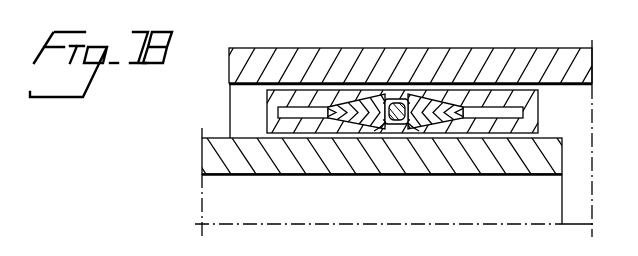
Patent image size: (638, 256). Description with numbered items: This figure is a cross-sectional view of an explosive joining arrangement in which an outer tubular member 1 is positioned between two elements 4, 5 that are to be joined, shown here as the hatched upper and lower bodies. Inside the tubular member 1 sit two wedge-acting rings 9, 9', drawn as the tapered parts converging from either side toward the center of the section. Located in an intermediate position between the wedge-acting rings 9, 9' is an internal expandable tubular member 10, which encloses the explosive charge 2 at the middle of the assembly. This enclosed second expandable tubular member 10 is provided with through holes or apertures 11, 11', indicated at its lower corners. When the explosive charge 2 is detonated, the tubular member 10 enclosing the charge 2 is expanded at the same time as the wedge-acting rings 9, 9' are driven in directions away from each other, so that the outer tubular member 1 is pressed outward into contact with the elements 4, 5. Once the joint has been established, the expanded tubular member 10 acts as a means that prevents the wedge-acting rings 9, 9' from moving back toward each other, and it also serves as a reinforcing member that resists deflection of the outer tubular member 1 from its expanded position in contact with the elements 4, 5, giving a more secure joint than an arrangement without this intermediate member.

The tubular member 1 is at (282, 92).
The explosive charge 2 is at (401, 97).
The element to be joined 4 is at (523, 62).
The element to be joined 5 is at (204, 137).
The wedge-acting ring 9 is at (356, 75).
The wedge-acting ring 9' is at (437, 75).
The expandable tubular member 10 is at (392, 100).
The through hole 11 is at (365, 162).
The through hole 11' is at (424, 162).